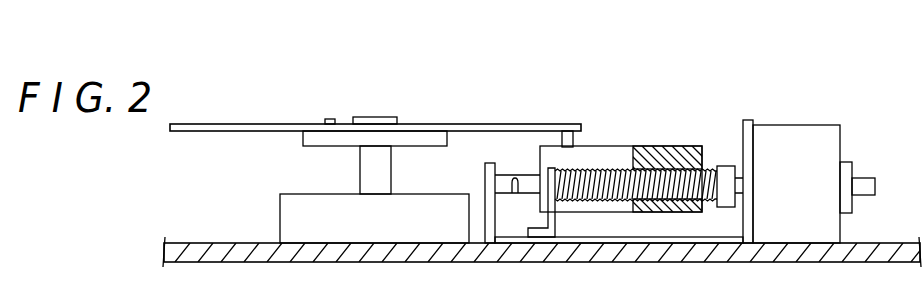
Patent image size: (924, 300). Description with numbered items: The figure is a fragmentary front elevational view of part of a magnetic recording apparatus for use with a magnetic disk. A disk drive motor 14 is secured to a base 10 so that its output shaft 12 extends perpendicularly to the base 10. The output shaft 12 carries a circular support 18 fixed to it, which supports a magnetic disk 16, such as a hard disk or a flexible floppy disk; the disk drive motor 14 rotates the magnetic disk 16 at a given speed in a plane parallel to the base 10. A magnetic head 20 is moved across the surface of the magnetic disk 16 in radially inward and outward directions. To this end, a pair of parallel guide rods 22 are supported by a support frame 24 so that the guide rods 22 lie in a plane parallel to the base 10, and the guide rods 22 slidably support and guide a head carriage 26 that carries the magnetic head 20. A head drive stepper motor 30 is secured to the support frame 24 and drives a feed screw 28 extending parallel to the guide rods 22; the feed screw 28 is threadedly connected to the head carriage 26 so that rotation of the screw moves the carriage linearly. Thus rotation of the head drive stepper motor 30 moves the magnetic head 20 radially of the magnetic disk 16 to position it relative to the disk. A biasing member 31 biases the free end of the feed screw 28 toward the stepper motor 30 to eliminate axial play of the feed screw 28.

The base 10 is at (213, 252).
The output shaft 12 is at (367, 177).
The disk drive motor 14 is at (290, 218).
The magnetic disk 16 is at (513, 124).
The circular support 18 is at (428, 140).
The magnetic head 20 is at (573, 138).
The guide rods 22 is at (527, 187).
The support frame 24 is at (677, 242).
The head carriage 26 is at (618, 150).
The feed screw 28 is at (715, 166).
The head drive stepper motor 30 is at (827, 135).
The biasing member 31 is at (555, 222).